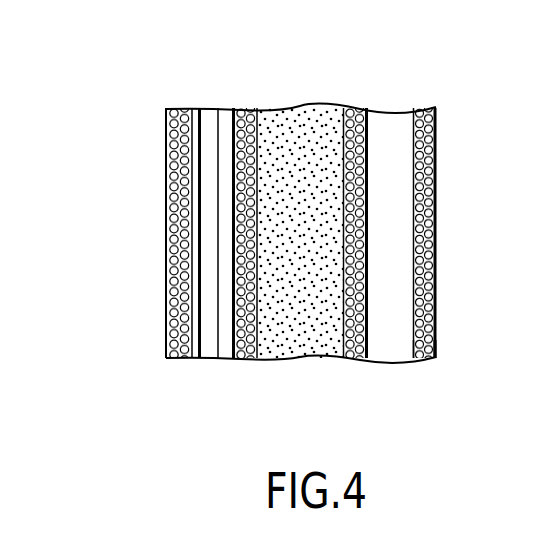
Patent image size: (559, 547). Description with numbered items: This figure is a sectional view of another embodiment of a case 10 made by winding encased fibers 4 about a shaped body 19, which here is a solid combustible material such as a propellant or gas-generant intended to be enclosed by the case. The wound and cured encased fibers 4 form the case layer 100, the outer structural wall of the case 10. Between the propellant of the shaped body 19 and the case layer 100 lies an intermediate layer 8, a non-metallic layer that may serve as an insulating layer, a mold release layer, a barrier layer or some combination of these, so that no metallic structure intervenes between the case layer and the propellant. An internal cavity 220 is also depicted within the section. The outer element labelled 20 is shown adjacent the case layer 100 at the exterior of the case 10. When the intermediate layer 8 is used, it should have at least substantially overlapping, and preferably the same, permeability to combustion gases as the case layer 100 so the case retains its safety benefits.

The intermediate layer 8 is at (245, 97).
The case 10 is at (150, 244).
The cavity 220 is at (203, 350).
The shaped body 19 is at (290, 343).
The encased fibers 4 is at (434, 213).
The outer cover layer 20 is at (434, 290).
The case layer 100 is at (430, 363).